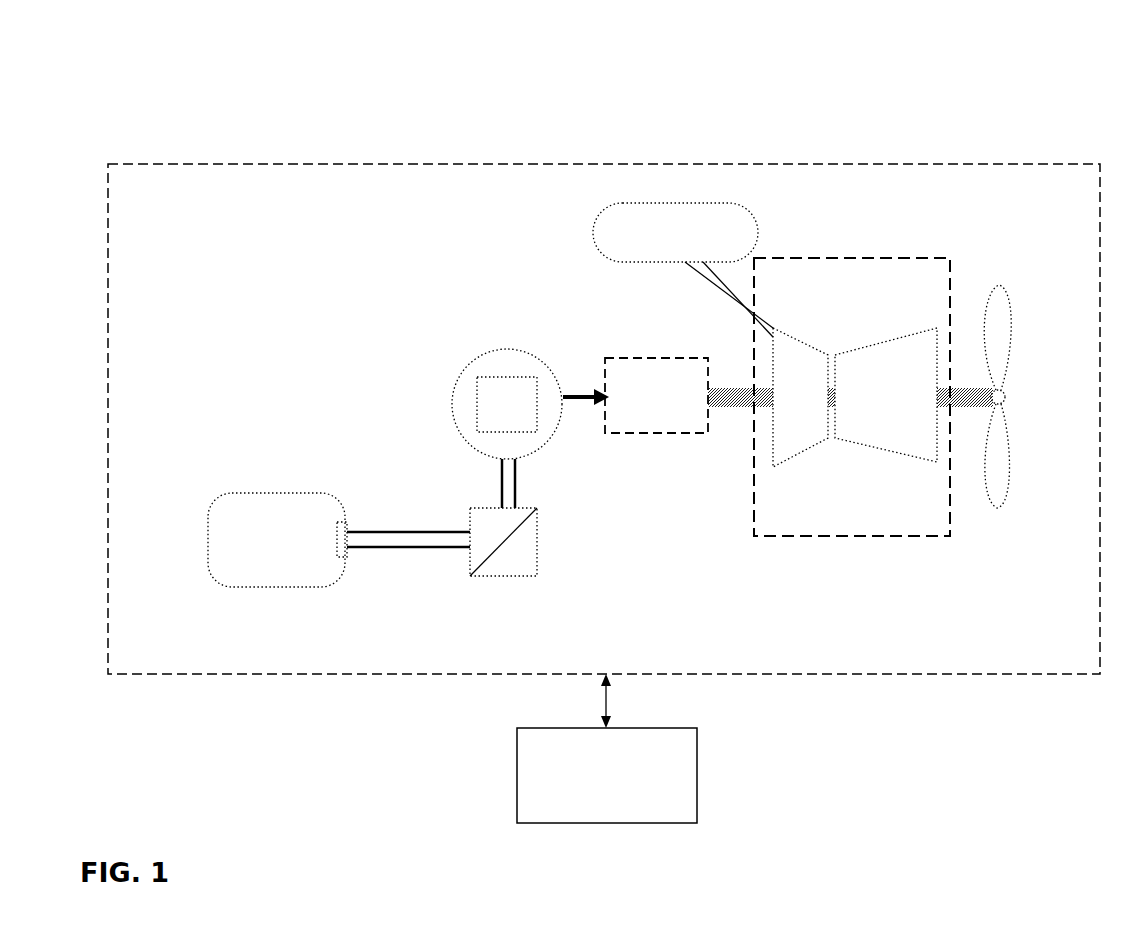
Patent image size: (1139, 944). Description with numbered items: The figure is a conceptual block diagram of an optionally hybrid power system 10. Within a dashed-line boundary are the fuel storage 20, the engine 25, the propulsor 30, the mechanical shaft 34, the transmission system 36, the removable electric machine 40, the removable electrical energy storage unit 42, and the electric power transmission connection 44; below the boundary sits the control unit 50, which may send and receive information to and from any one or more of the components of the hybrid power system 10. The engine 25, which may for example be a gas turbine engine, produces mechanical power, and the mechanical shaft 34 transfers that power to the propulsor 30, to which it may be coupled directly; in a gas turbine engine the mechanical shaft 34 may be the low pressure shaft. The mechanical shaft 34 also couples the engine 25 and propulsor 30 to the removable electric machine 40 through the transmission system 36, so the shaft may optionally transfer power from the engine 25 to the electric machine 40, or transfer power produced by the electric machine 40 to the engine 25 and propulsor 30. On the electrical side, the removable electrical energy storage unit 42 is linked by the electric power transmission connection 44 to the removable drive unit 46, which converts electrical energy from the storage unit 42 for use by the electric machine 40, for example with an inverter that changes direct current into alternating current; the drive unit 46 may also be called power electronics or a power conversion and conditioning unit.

The hybrid power system 10 is at (121, 78).
The fuel storage 20 is at (667, 253).
The engine 25 is at (893, 254).
The propulsor 30 is at (1004, 512).
The mechanical shaft 34 is at (738, 411).
The transmission system 36 is at (647, 404).
The removable electric machine 40 is at (486, 347).
The removable electrical energy storage unit 42 is at (269, 576).
The electric power transmission connection 44 is at (412, 527).
The removable drive unit 46 is at (513, 579).
The control unit 50 is at (598, 797).